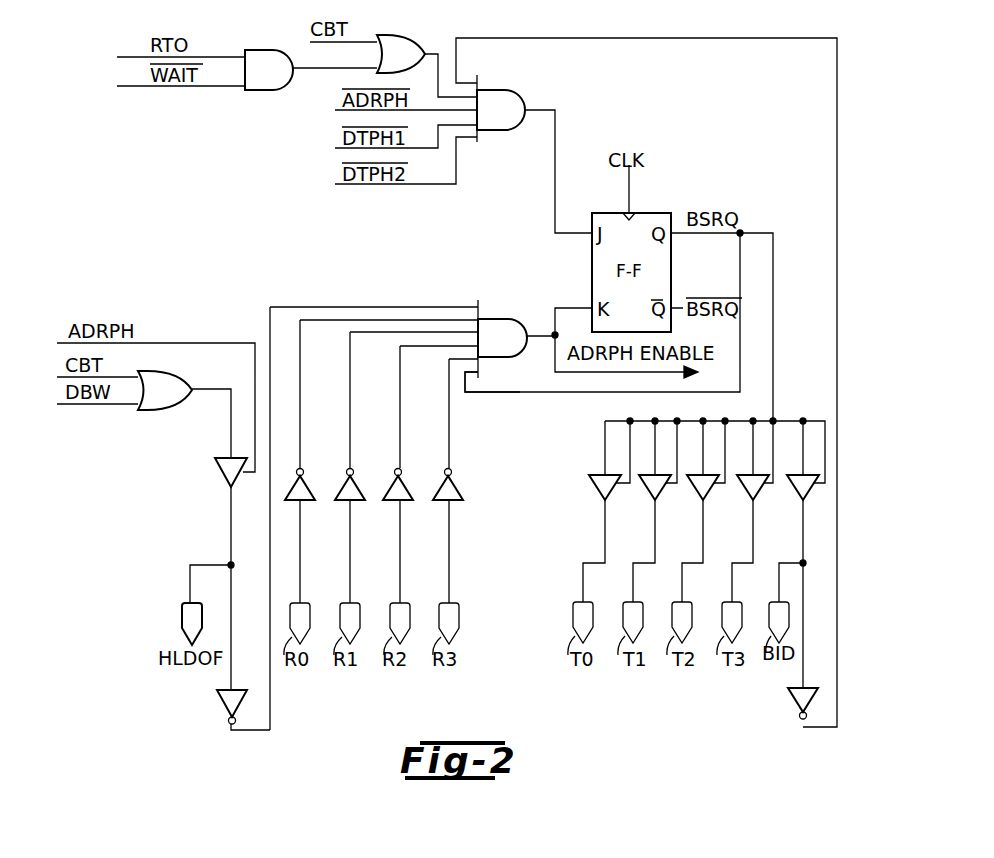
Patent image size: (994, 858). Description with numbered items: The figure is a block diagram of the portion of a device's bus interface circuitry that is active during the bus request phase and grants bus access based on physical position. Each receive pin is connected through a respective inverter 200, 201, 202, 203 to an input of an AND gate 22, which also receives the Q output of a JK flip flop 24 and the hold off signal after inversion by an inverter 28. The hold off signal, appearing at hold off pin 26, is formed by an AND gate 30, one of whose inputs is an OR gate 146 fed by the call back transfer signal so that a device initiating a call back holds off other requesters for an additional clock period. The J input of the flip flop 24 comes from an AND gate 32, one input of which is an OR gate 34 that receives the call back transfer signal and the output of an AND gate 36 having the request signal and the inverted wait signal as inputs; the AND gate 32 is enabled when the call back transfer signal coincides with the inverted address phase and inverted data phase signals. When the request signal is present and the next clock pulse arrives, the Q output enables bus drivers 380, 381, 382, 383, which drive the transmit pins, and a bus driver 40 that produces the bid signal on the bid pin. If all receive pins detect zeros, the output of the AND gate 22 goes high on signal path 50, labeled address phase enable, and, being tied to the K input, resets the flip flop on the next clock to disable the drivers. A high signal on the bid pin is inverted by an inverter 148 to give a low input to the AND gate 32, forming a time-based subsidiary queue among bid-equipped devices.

The AND gate 36 is at (275, 92).
The OR gate 34 is at (408, 35).
The AND gate 32 is at (502, 88).
The JK flip flop 24 is at (592, 262).
The AND gate 22 is at (503, 317).
The signal path 50 is at (555, 374).
The OR gate 146 is at (176, 410).
The AND gate 30 is at (222, 473).
The hold off pin 26 is at (182, 618).
The inverter 28 is at (217, 700).
The inverter 200 is at (308, 486).
The inverter 201 is at (358, 484).
The inverter 202 is at (407, 486).
The inverter 203 is at (457, 484).
The bus driver 380 is at (597, 486).
The bus driver 381 is at (648, 486).
The bus driver 382 is at (697, 486).
The bus driver 383 is at (747, 486).
The bus driver 40 is at (797, 486).
The inverter 148 is at (791, 698).